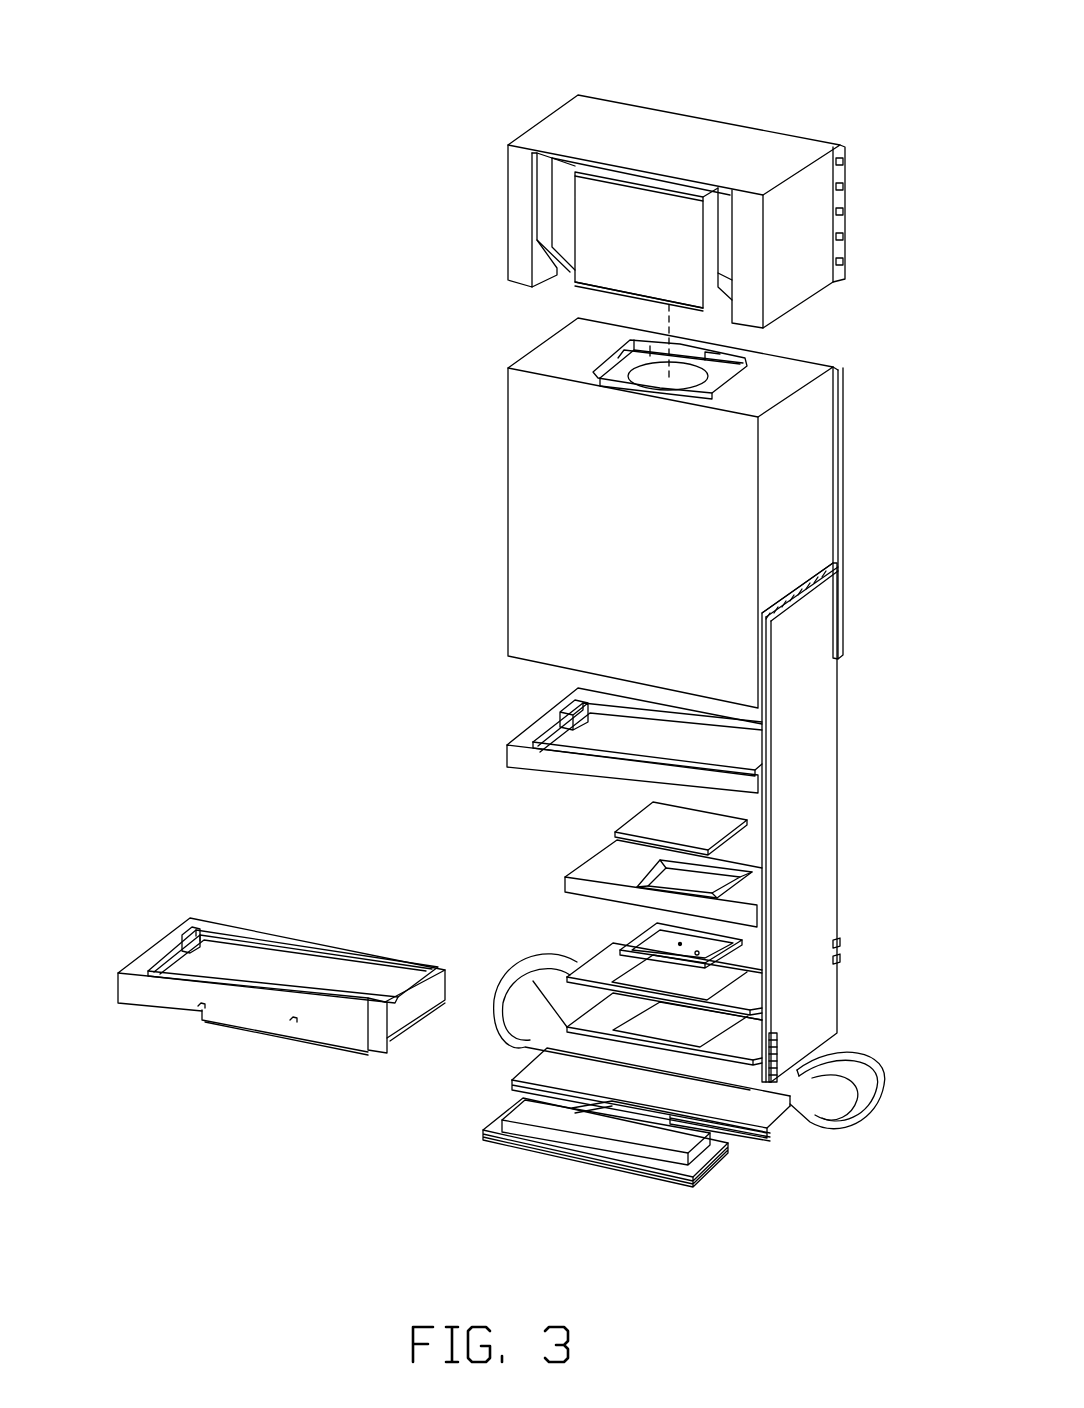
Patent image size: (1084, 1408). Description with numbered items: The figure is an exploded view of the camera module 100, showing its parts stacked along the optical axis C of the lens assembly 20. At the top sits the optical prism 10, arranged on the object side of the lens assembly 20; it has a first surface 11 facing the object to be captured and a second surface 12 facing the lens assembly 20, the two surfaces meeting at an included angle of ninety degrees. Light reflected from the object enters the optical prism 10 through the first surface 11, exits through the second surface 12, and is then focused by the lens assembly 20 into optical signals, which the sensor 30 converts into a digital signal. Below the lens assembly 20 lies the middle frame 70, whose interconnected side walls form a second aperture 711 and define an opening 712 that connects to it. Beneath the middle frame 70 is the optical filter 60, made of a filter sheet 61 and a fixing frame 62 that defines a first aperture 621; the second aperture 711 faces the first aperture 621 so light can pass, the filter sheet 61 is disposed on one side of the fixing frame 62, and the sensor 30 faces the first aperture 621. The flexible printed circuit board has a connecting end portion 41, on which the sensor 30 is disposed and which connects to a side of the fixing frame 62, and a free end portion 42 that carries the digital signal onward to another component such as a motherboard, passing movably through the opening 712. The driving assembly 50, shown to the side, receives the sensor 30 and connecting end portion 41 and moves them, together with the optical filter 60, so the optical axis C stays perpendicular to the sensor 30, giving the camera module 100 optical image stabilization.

The camera module 100 is at (515, 28).
The optical prism 10 is at (690, 268).
The first surface 11 is at (607, 236).
The second surface 12 is at (613, 292).
The optical axis C is at (670, 358).
The lens assembly 20 is at (723, 507).
The sensor 30 is at (645, 940).
The connecting end portion 41 is at (590, 1020).
The free end portion 42 is at (747, 1110).
The driving assembly 50 is at (135, 990).
The optical filter 60 is at (480, 800).
The filter sheet 61 is at (627, 818).
The fixing frame 62 is at (708, 882).
The first aperture 621 is at (703, 882).
The middle frame 70 is at (671, 735).
The second aperture 711 is at (713, 758).
The opening 712 is at (553, 730).